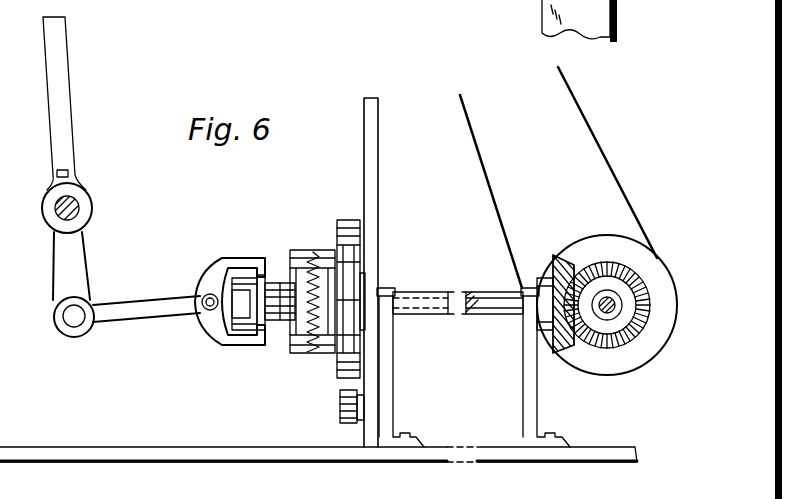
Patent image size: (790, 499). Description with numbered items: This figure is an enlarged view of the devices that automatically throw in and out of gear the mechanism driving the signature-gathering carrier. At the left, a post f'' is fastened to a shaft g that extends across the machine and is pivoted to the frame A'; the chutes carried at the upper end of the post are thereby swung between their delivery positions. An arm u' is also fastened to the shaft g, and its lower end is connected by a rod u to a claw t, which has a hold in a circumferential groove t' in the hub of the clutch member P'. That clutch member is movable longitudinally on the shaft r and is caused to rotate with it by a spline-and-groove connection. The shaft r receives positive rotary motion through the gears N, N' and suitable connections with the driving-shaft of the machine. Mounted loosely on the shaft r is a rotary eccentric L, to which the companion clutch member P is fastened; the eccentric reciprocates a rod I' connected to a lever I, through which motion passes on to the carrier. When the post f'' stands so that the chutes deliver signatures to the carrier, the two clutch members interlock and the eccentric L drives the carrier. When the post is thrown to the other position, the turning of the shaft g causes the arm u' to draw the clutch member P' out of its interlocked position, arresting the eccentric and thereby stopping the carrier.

The post f'' is at (51, 103).
The shaft g is at (56, 208).
The arm u' is at (56, 284).
The rod u is at (155, 297).
The claw t is at (230, 287).
The circumferential groove t' is at (276, 280).
The clutch member P' is at (306, 320).
The clutch member P is at (311, 321).
The rotary eccentric L is at (347, 220).
The lever I is at (378, 272).
The rod I' is at (333, 406).
The shaft r is at (458, 292).
The gear N is at (554, 299).
The gear N' is at (607, 304).
The frame A' is at (318, 442).